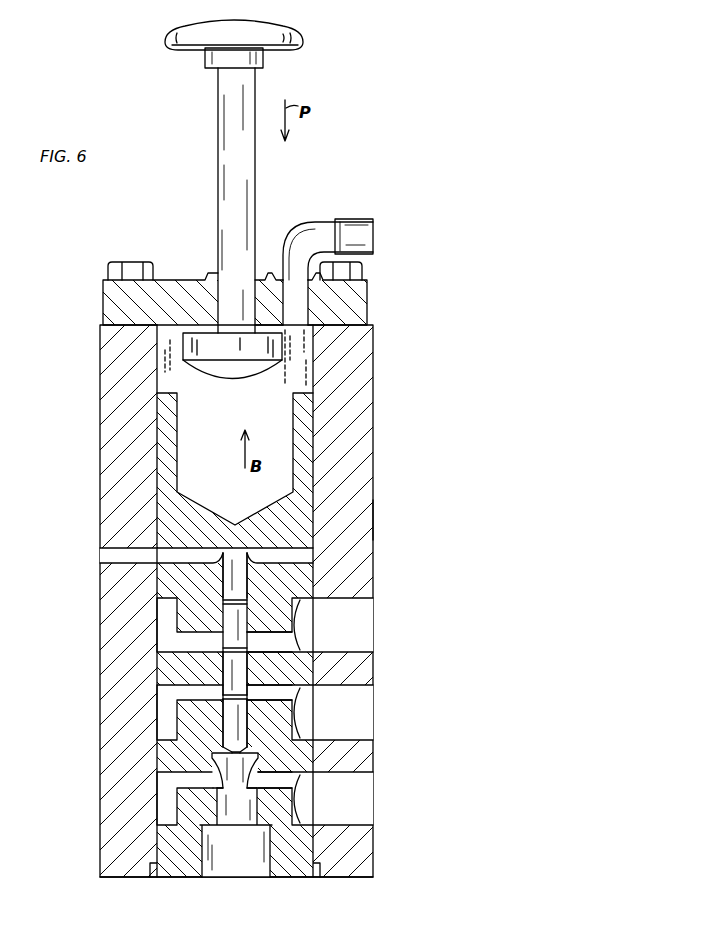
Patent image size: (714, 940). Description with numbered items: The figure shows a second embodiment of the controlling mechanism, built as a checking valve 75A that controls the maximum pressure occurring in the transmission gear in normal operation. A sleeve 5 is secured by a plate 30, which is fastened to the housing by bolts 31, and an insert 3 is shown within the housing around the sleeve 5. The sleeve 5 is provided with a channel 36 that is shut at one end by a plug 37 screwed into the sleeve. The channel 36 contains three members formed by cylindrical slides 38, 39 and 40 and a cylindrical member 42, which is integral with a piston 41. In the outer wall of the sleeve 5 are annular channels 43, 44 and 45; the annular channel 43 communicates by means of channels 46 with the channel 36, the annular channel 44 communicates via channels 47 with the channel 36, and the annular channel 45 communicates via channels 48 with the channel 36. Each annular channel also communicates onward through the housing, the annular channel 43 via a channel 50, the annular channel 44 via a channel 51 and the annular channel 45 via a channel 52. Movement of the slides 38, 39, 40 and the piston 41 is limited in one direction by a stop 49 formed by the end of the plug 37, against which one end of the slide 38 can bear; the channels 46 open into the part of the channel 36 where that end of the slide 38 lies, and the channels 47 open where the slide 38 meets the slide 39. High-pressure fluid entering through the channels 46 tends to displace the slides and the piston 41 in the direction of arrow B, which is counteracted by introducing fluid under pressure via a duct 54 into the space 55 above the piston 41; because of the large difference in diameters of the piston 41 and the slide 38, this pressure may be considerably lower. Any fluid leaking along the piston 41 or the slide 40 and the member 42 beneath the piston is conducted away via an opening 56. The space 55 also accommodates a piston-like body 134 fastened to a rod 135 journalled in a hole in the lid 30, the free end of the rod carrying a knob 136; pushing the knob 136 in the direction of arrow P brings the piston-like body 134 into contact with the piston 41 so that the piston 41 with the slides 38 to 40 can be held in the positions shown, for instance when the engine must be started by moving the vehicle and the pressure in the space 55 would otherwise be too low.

The knob 136 is at (304, 46).
The rod 135 is at (222, 157).
The duct 54 is at (352, 228).
The bolts 31 is at (128, 262).
The plate 30 is at (104, 301).
The cylinder insert 3 is at (157, 356).
The space 55 is at (305, 352).
The piston-like body 134 is at (232, 380).
The piston 41 is at (165, 448).
The checking valve 75A is at (373, 518).
The opening 56 is at (100, 557).
The cylindrical member 42 is at (250, 577).
The cylindrical slide 40 is at (251, 650).
The annular channel 45 is at (303, 608).
The channels 48 is at (292, 640).
The channel 52 is at (287, 625).
The cylindrical slide 39 is at (249, 666).
The channels 47 is at (290, 697).
The annular channel 44 is at (303, 716).
The channel 51 is at (287, 712).
The cylindrical slide 38 is at (249, 724).
The stop 49 is at (212, 762).
The channel 36 is at (255, 760).
The channels 46 is at (290, 779).
The annular channel 43 is at (303, 802).
The channel 50 is at (287, 796).
The sleeve 5 is at (172, 878).
The plug 37 is at (238, 878).